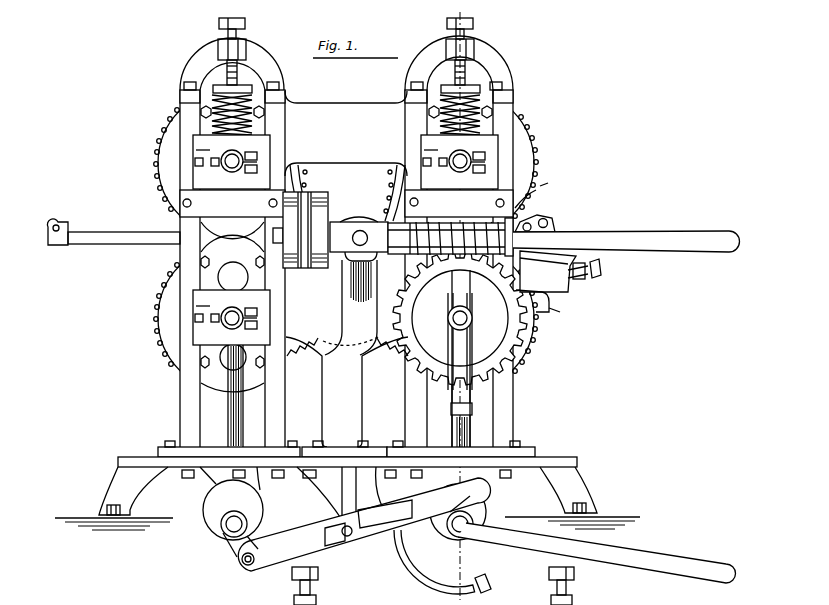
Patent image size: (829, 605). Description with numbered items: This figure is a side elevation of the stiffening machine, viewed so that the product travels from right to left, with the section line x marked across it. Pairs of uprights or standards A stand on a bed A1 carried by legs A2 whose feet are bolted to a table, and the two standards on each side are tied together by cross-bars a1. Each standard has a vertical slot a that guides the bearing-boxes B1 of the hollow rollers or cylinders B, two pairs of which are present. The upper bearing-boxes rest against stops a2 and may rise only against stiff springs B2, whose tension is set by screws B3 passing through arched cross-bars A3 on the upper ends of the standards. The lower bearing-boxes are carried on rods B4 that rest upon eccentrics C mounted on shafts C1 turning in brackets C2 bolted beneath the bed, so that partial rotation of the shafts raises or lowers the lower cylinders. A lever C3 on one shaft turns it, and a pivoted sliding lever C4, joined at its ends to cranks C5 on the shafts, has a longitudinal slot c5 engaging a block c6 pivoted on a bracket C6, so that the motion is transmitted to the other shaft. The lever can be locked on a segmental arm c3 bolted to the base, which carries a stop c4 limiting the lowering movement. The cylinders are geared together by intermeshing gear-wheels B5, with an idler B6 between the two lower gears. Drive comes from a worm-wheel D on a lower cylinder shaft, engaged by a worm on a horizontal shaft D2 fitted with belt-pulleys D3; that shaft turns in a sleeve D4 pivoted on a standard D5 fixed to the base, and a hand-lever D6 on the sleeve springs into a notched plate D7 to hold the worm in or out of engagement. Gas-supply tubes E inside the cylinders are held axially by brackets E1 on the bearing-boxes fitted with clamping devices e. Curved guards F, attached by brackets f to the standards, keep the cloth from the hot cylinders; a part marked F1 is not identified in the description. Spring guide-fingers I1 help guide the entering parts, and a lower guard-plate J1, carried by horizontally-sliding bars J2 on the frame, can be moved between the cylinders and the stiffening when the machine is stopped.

The section line x is at (458, 300).
The uprights or standards A is at (190, 403).
The bed A1 is at (148, 452).
The legs A2 is at (126, 496).
The arched cross-bars A3 is at (198, 60).
The vertical slots a is at (346, 268).
The cross-bars a1 is at (347, 353).
The stops a2 is at (346, 156).
The rollers or cylinders B is at (166, 131).
The bearing-boxes B1 is at (212, 180).
The stiff springs B2 is at (255, 101).
The screws B3 is at (237, 33).
The rods B4 is at (229, 381).
The gear-wheels B5 is at (167, 189).
The intermediate gear-wheel or idler B6 is at (318, 346).
The eccentrics C is at (495, 505).
The shafts C1 is at (222, 530).
The brackets C2 is at (212, 497).
The lever C3 is at (612, 551).
The pivoted and sliding lever C4 is at (364, 524).
The cranks C5 is at (256, 538).
The bracket C6 is at (340, 518).
The segmental arm c3 is at (411, 563).
The projection or stop c4 is at (486, 583).
The longitudinal slot c5 is at (341, 546).
The block c6 is at (340, 542).
The worm-wheel D is at (460, 350).
The shaft D2 is at (396, 223).
The belt-pulleys D3 is at (306, 232).
The sleeve D4 is at (353, 234).
The standard D5 is at (366, 284).
The hand-lever D6 is at (695, 242).
The notched plate D7 is at (552, 224).
The gas-supply tubes E is at (231, 155).
The arms or brackets E1 is at (194, 318).
The clamping devices e is at (368, 240).
The curved guides or guards F is at (537, 201).
The pawl pin F1 is at (200, 153).
The brackets or arms f is at (557, 247).
The spring guide-fingers I1 is at (540, 262).
The lower guard-plate J1 is at (60, 224).
The horizontally-sliding bars J2 is at (122, 243).